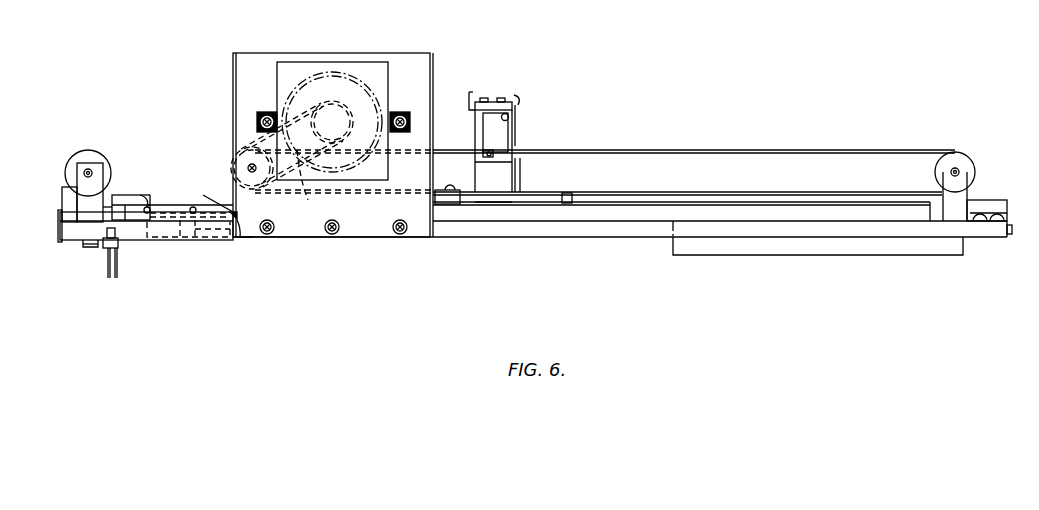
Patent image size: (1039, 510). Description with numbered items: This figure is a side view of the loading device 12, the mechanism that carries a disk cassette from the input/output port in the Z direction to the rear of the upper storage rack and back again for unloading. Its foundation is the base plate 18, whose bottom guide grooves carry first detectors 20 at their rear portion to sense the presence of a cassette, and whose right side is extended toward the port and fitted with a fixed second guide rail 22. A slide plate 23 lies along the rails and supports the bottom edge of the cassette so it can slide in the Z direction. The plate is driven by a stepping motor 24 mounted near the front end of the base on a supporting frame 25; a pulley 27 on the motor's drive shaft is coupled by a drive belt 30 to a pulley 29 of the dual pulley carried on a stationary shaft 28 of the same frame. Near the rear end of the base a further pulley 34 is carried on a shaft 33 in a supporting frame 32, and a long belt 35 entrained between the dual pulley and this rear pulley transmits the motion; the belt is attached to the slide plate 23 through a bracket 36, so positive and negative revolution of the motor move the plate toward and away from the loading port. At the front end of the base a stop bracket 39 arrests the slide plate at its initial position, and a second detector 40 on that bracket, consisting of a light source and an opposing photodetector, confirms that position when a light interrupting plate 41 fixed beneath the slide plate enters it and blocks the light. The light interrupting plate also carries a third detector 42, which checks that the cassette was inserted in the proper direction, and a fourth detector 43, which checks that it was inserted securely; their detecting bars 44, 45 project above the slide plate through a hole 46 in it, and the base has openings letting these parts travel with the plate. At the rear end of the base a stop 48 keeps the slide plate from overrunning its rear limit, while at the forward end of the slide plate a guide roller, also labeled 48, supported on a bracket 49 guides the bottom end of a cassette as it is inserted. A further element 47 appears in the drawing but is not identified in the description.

The loading device 12 is at (700, 144).
The base plate 18 is at (577, 228).
The first detectors 20 is at (495, 120).
The second guide rail 22 is at (766, 218).
The slide plate 23 is at (566, 199).
The stepping motor 24 is at (362, 90).
The supporting frame 25 is at (262, 72).
The pulley 27 is at (303, 100).
The stationary shaft 28 is at (234, 160).
The pulley 29 is at (257, 190).
The drive belt 30 is at (302, 176).
The supporting frame 32 is at (947, 163).
The shaft 33 is at (960, 168).
The pulley 34 is at (938, 174).
The belt 35 is at (806, 152).
The bracket 36 is at (442, 189).
The stop bracket 39 is at (58, 222).
The second detector 40 is at (114, 257).
The light interrupting plate 41 is at (138, 242).
The third detector 42 is at (180, 242).
The fourth detector 43 is at (208, 242).
The detecting bar 44 is at (149, 207).
The detecting bar 45 is at (193, 207).
The hole 46 is at (130, 205).
The wedge 47 is at (237, 242).
The guide roller / stop 48 is at (1011, 205).
The bracket 49 is at (63, 188).